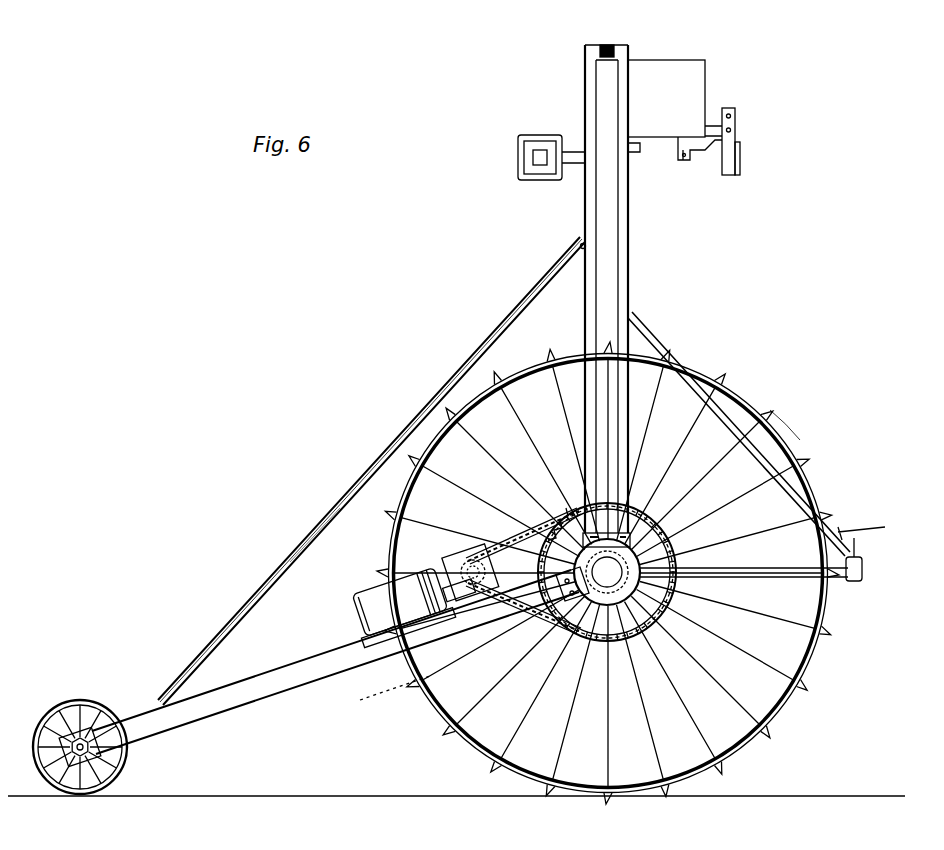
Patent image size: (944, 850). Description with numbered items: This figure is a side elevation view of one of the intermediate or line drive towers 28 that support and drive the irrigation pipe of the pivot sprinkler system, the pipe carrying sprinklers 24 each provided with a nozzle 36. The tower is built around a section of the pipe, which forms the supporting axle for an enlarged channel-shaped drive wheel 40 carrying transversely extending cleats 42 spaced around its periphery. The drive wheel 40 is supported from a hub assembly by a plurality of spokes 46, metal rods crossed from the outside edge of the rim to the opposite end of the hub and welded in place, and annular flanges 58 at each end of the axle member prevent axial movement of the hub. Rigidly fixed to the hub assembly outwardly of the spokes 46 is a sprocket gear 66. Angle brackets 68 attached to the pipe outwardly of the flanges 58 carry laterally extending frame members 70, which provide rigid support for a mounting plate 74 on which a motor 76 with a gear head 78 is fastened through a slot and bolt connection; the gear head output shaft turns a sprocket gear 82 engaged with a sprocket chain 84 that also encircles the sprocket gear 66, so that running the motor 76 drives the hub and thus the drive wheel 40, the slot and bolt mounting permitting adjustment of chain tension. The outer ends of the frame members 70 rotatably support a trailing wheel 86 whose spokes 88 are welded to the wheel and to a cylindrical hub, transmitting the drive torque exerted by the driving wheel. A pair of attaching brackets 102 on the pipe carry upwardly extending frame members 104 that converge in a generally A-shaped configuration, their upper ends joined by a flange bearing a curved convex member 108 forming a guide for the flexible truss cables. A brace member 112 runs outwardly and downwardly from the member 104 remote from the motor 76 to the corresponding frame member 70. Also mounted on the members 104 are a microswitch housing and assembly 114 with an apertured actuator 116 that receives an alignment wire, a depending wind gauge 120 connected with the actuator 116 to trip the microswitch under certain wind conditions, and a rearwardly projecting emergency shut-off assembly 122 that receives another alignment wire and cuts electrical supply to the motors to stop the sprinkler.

The sprinkler 24 is at (836, 582).
The intermediate or line drive tower 28 is at (432, 360).
The nozzle 36 is at (862, 537).
The drive wheel 40 is at (740, 398).
The cleats 42 is at (766, 413).
The spokes 46 is at (780, 712).
The annular flange 58 is at (700, 602).
The sprocket gear 66 is at (712, 533).
The angle bracket 68 is at (548, 636).
The frame member 70 is at (337, 665).
The mounting plate 74 is at (358, 632).
The motor 76 is at (376, 599).
The gear head 78 is at (452, 560).
The sprocket gear 82 is at (466, 600).
The sprocket chain 84 is at (547, 527).
The trailing wheel 86 is at (90, 704).
The spokes 88 is at (72, 706).
The attaching bracket 102 is at (640, 513).
The upwardly extending frame member 104 is at (628, 266).
The curved convex member 108 is at (607, 45).
The brace member 112 is at (340, 510).
The microswitch housing and assembly 114 is at (710, 75).
The apertured actuator 116 is at (683, 162).
The wind gauge 120 is at (741, 160).
The emergency shut-off assembly 122 is at (530, 135).